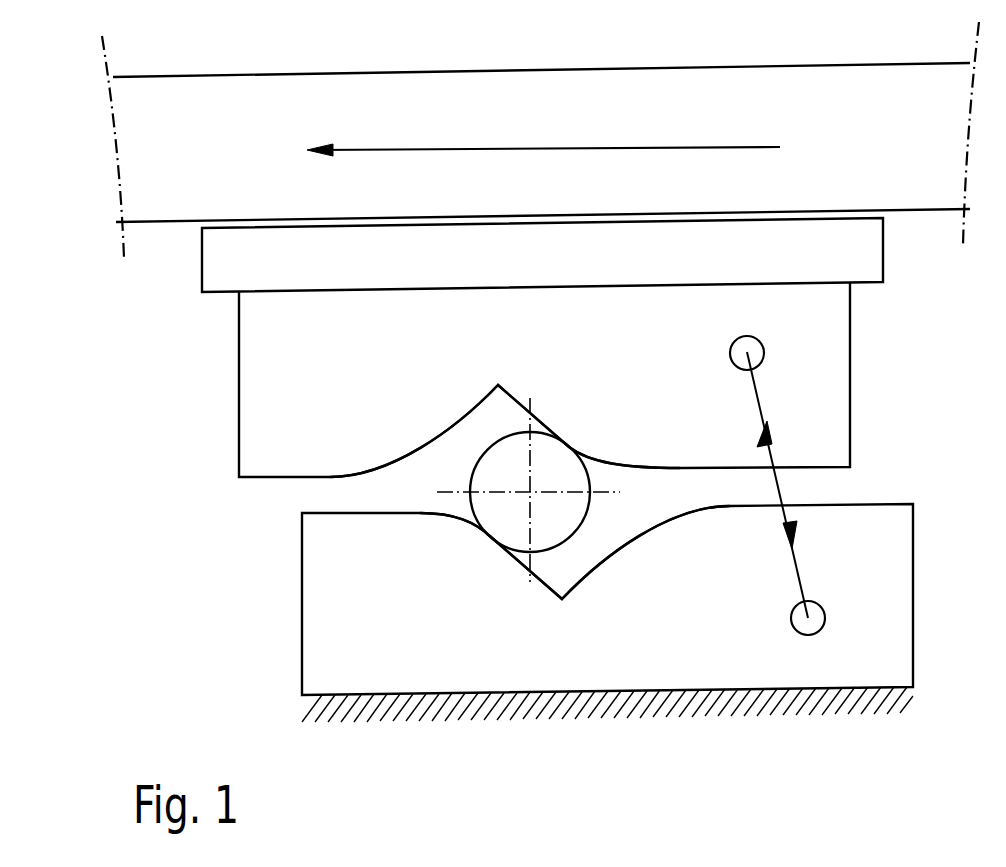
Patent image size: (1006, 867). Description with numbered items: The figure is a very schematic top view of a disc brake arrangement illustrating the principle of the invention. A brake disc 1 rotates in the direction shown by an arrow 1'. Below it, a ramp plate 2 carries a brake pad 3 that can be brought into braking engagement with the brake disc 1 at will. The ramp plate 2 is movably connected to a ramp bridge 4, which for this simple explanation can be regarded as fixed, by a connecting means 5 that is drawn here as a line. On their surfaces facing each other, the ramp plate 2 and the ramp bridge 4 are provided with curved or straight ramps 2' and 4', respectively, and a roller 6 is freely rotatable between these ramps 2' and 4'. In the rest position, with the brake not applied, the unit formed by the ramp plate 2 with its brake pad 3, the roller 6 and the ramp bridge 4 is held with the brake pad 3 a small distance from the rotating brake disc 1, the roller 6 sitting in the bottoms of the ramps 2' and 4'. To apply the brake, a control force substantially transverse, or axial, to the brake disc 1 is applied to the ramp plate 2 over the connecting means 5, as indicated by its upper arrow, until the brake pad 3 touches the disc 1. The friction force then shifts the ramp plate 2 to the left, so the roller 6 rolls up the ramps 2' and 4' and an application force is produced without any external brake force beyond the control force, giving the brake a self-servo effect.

The brake disc 1 is at (514, 140).
The arrow 1' is at (543, 116).
The ramp plate 2 is at (497, 379).
The ramps 2' is at (505, 412).
The brake pad 3 is at (213, 266).
The ramp bridge 4 is at (562, 613).
The ramps 4' is at (553, 559).
The connecting means 5 is at (781, 482).
The roller 6 is at (483, 494).